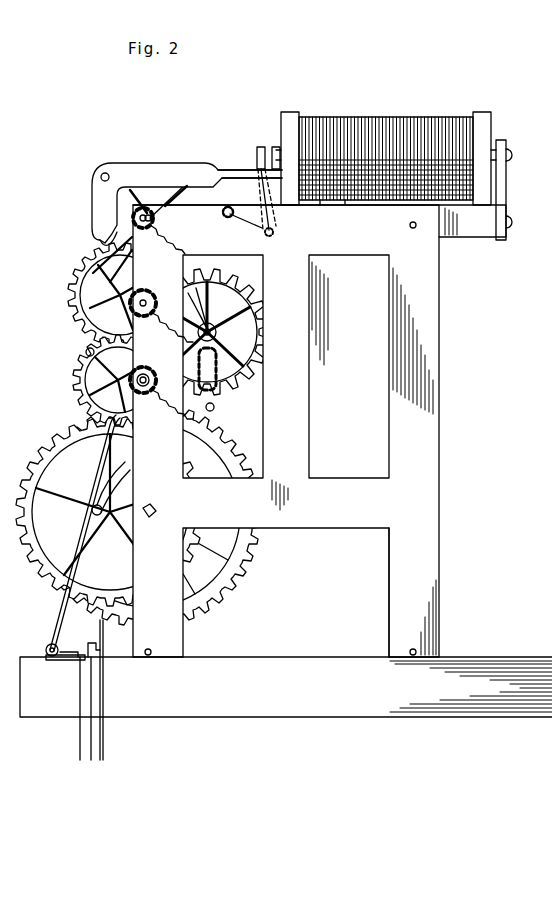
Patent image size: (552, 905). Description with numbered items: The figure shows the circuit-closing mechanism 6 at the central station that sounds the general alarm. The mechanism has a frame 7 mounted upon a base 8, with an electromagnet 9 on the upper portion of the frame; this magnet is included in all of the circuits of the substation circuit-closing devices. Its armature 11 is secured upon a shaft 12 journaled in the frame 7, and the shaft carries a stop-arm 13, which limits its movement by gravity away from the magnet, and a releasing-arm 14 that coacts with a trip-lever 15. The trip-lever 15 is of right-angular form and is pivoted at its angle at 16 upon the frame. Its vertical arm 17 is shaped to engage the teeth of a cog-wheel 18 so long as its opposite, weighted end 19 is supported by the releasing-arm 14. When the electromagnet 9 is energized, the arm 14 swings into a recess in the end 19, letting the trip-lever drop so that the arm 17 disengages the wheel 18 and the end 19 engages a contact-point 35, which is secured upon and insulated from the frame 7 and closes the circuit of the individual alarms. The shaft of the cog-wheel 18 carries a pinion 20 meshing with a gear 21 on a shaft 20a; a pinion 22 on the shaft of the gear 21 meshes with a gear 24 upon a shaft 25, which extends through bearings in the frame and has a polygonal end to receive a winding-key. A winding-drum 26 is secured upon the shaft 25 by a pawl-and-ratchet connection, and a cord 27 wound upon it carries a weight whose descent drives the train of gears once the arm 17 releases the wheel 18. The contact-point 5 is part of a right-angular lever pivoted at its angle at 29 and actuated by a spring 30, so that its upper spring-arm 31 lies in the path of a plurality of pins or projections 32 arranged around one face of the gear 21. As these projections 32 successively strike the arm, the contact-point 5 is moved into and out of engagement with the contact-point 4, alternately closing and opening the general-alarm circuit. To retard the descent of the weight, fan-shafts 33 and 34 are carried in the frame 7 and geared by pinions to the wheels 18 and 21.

The contact-point 4 is at (95, 657).
The contact-point 5 is at (68, 657).
The mechanism 6 is at (296, 431).
The frame 7 is at (440, 525).
The base 8 is at (286, 687).
The electromagnet 9 is at (394, 167).
The armature 11 is at (260, 146).
The shaft 12 is at (275, 232).
The stop-arm 13 is at (229, 207).
The releasing-arm 14 is at (258, 225).
The trip-lever 15 is at (188, 168).
The pivot 16 is at (104, 172).
The vertical arm 17 is at (99, 239).
The cog-wheel 18 is at (76, 300).
The end of trip-lever 19 is at (226, 168).
The pinion 20 is at (146, 299).
The shaft 20a is at (138, 382).
The gear 21 is at (78, 384).
The pinion 22 is at (150, 377).
The gear 24 is at (28, 492).
The shaft 25 is at (153, 511).
The winding-drum 26 is at (118, 538).
The cord 27 is at (105, 740).
The pivot 29 is at (46, 650).
The spring 30 is at (56, 620).
The spring-arm 31 is at (97, 484).
The pins or projections 32 is at (86, 352).
The fan-shaft 33 is at (152, 218).
The fan-shaft 34 is at (215, 333).
The contact-point 35 is at (336, 204).